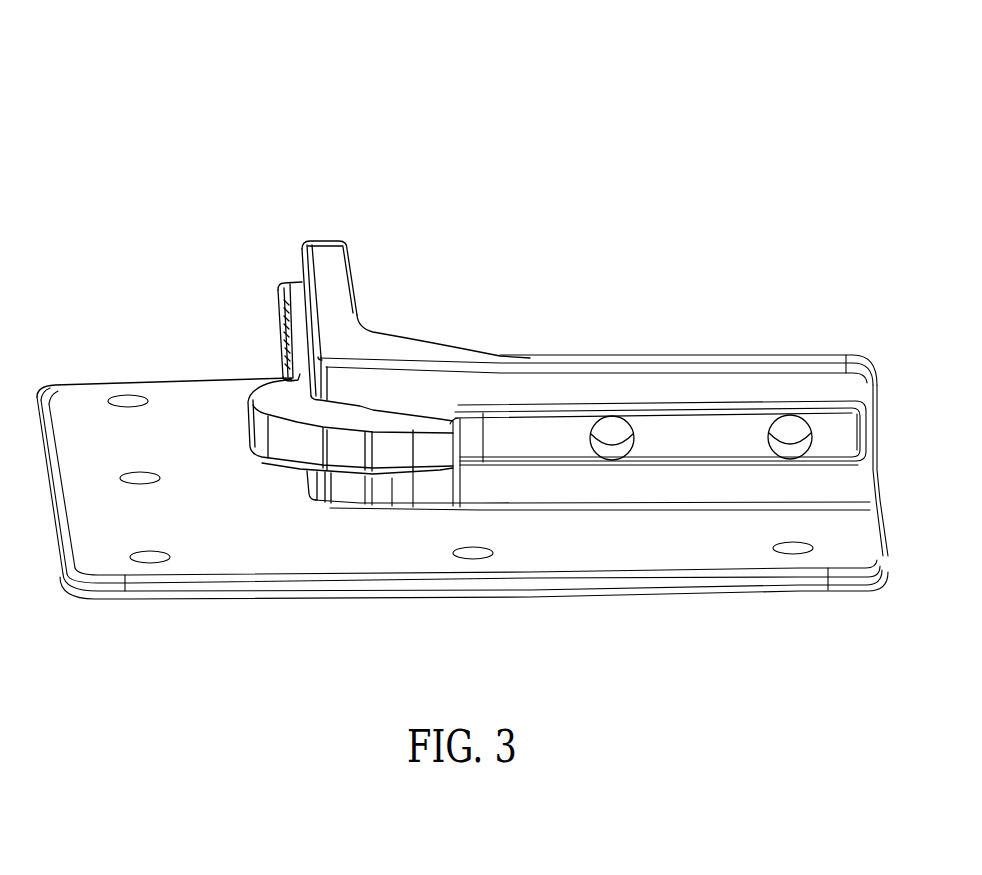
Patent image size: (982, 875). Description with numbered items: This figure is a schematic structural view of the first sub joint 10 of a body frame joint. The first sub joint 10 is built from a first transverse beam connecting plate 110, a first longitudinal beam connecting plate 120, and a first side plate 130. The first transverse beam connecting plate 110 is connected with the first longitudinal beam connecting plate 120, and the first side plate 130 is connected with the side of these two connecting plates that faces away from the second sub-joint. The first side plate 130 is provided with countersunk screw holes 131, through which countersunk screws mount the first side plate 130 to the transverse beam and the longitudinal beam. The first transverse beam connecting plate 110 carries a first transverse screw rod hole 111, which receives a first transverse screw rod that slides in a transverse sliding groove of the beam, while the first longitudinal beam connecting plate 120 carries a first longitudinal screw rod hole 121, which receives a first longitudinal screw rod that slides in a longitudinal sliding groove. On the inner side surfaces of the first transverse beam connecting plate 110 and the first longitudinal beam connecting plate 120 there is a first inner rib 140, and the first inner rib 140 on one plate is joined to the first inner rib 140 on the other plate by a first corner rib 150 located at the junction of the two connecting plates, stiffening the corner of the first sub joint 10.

The first sub joint 10 is at (402, 97).
The first transverse beam connecting plate 110 is at (722, 387).
The first transverse screw rod hole 111 is at (613, 437).
The first longitudinal beam connecting plate 120 is at (323, 280).
The first longitudinal screw rod hole 121 is at (282, 302).
The first side plate 130 is at (192, 398).
The countersunk screw holes 131 is at (150, 557).
The first inner rib 140 is at (289, 335).
The first corner rib 150 is at (323, 432).